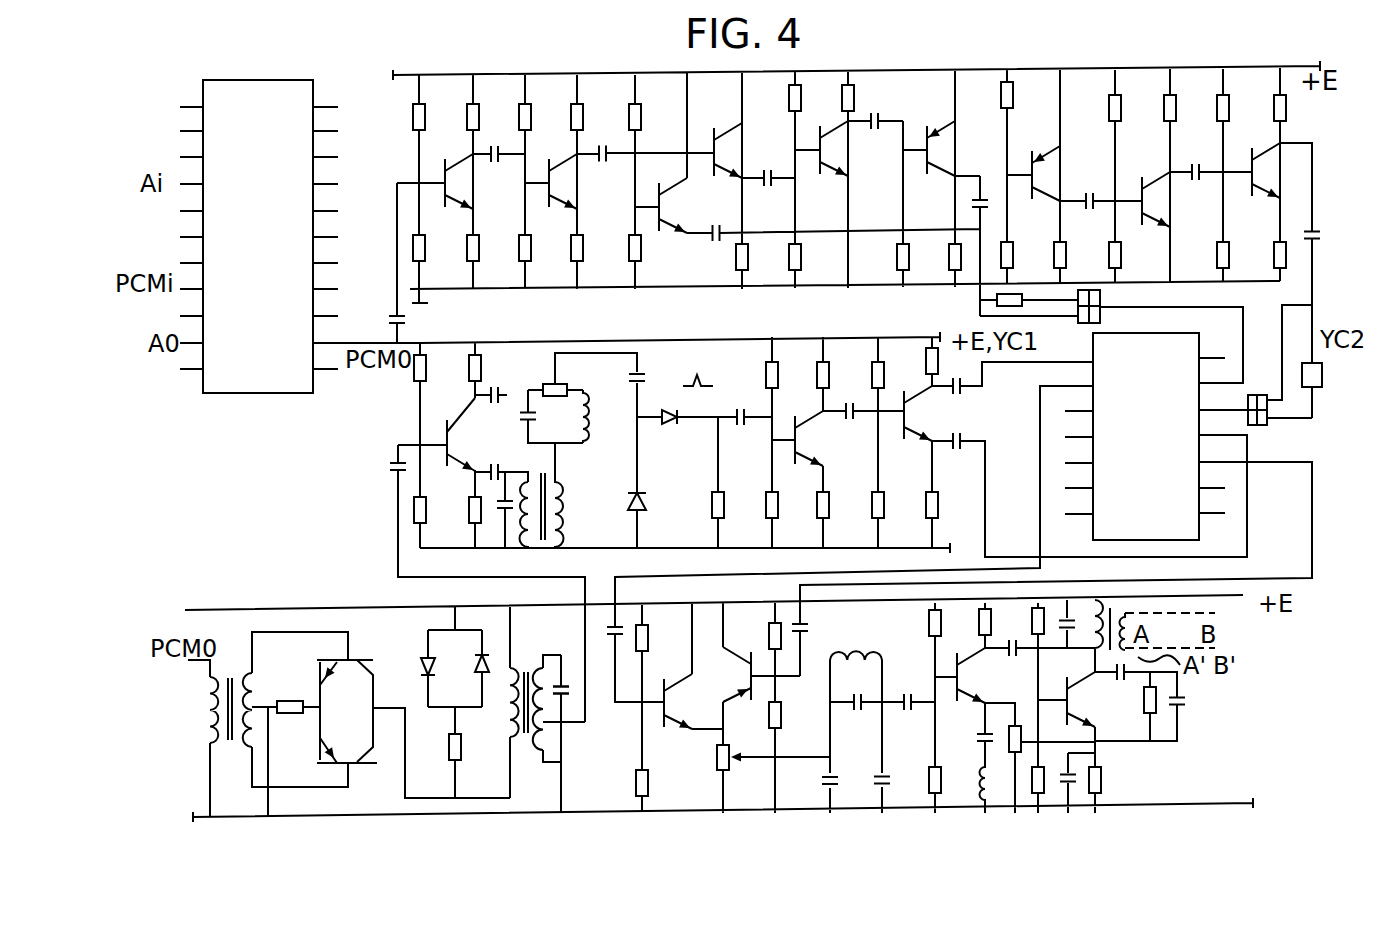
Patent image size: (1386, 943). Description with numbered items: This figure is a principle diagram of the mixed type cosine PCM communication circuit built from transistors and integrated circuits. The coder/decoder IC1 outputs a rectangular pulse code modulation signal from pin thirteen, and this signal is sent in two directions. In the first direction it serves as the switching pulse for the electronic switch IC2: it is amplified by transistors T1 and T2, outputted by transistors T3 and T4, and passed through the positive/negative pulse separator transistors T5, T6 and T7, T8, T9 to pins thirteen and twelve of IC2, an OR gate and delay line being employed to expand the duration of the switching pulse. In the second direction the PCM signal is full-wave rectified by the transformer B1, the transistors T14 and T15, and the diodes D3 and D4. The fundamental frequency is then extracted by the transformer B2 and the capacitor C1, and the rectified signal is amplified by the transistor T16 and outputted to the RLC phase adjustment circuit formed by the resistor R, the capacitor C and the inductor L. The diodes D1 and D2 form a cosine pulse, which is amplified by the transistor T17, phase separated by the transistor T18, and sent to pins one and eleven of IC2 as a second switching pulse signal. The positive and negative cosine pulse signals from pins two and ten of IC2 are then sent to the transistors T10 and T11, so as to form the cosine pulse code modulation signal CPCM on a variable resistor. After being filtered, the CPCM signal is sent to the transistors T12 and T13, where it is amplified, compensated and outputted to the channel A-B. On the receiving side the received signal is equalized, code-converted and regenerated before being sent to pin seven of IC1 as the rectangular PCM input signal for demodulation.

The transistor T1 is at (469, 183).
The transistor T2 is at (573, 183).
The transistor T3 is at (686, 207).
The transistor T4 is at (740, 152).
The positive/negative pulse separator transistor T5 is at (845, 150).
The positive/negative pulse separator transistor T6 is at (952, 148).
The positive/negative pulse separator transistor T7 is at (1054, 173).
The positive/negative pulse separator transistor T8 is at (1167, 201).
The positive/negative pulse separator transistor T9 is at (1271, 172).
The transistor T10 is at (692, 703).
The transistor T11 is at (725, 674).
The transistor T12 is at (990, 677).
The transistor T13 is at (1094, 701).
The transistor T14 is at (356, 672).
The transistor T15 is at (358, 755).
The transistor T16 is at (480, 436).
The transistor T17 is at (827, 440).
The transistor T18 is at (934, 415).
The coder/decoder IC1 is at (259, 236).
The electronic switch IC2 is at (1156, 436).
The diode D1 is at (679, 435).
The diode D2 is at (656, 520).
The diode D3 is at (410, 684).
The diode D4 is at (464, 683).
The resistor R is at (570, 378).
The capacitor C is at (539, 424).
The inductor L is at (597, 416).
The capacitor C1 is at (570, 663).
The transformer B1 is at (231, 746).
The transformer B2 is at (531, 742).
The cosine pulse code modulation signal CPCM is at (693, 760).